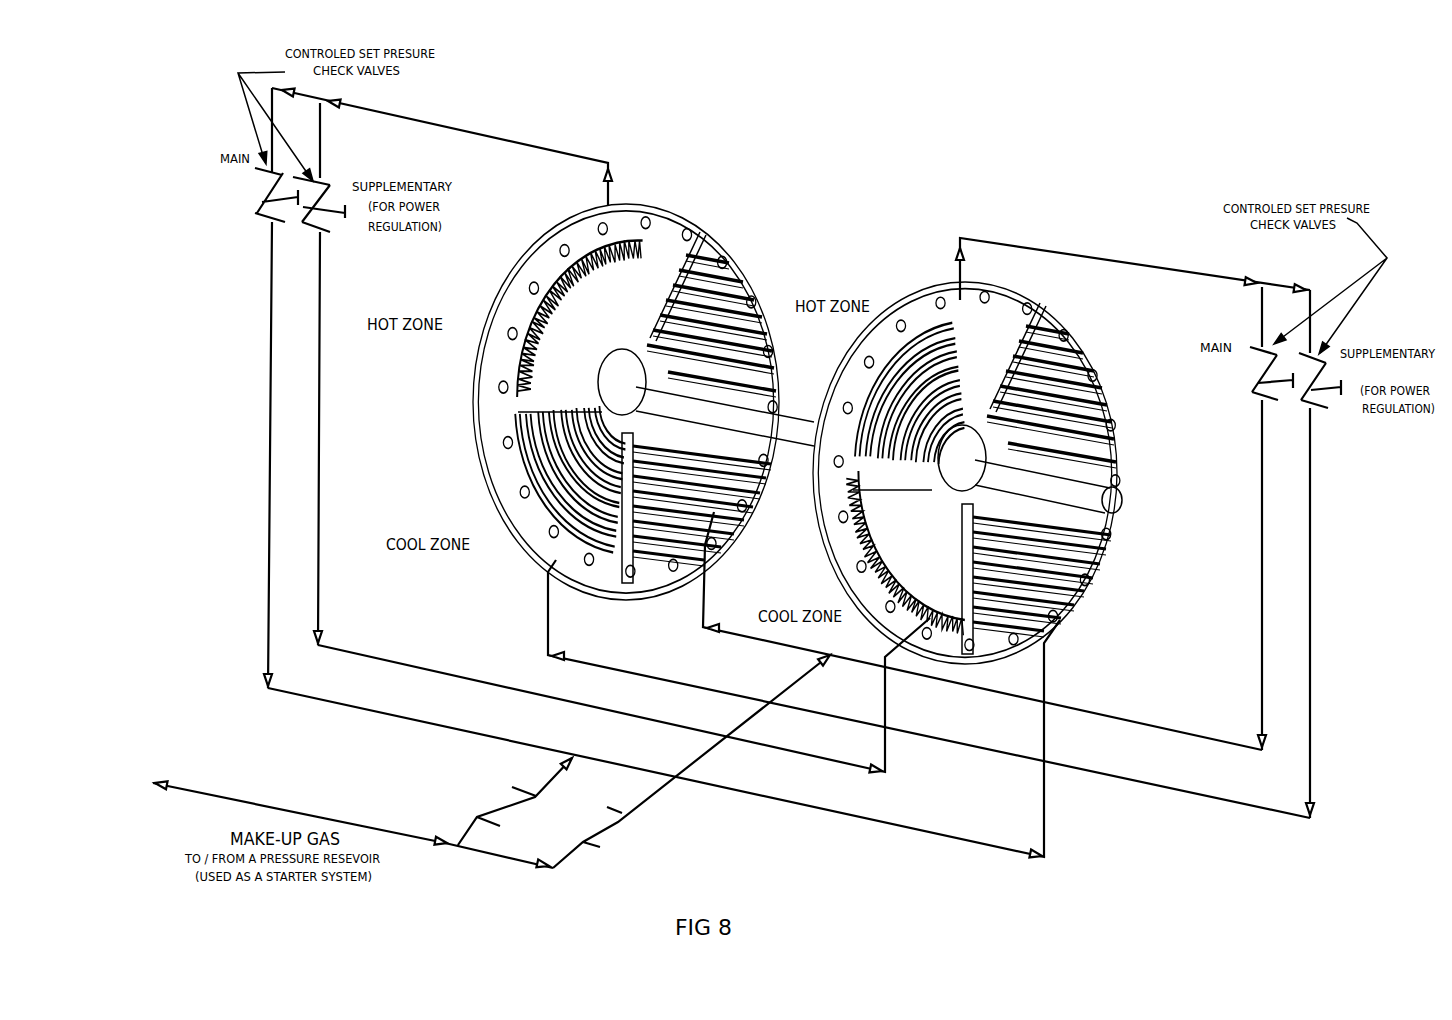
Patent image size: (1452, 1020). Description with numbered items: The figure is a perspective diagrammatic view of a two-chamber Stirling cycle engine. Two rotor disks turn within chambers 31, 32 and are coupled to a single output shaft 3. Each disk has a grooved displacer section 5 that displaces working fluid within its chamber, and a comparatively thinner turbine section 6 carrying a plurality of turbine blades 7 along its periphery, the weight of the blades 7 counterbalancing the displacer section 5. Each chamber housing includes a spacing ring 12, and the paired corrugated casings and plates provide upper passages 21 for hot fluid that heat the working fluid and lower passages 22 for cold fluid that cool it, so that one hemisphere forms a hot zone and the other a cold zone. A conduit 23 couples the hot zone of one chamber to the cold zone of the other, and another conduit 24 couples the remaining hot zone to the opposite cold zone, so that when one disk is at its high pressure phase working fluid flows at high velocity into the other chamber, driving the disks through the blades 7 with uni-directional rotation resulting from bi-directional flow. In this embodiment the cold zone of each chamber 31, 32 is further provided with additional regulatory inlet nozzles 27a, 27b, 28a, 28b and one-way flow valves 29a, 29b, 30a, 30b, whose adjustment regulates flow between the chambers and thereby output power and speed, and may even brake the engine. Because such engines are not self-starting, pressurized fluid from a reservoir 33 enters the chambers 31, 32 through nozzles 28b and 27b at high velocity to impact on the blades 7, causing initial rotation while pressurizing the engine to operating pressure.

The output shaft 3 is at (1122, 487).
The displacer section 5 is at (545, 453).
The turbine section 6 is at (565, 322).
The turbine blades 7 is at (532, 356).
The spacing ring 12 is at (656, 207).
The upper passages 21 is at (733, 300).
The lower passages 22 is at (672, 540).
The conduit 23 is at (478, 126).
The conduit 24 is at (1112, 258).
The regulatory inlet nozzle 27a is at (575, 566).
The regulatory inlet nozzle 27b is at (718, 512).
The regulatory inlet nozzle 28a is at (922, 640).
The regulatory inlet nozzle 28b is at (1062, 576).
The one-way flow valve 29a is at (270, 178).
The one-way flow valve 29b is at (268, 205).
The one-way flow valve 30a is at (1260, 390).
The one-way flow valve 30b is at (1295, 380).
The chamber 31 is at (591, 402).
The chamber 32 is at (961, 473).
The reservoir 33 is at (165, 780).